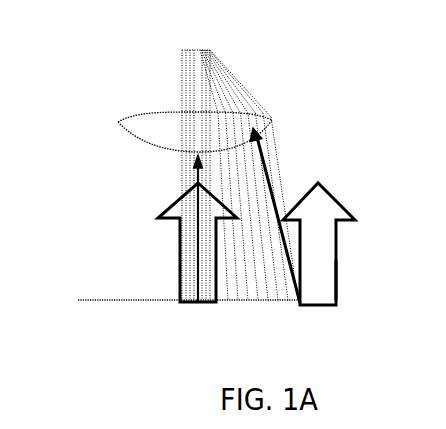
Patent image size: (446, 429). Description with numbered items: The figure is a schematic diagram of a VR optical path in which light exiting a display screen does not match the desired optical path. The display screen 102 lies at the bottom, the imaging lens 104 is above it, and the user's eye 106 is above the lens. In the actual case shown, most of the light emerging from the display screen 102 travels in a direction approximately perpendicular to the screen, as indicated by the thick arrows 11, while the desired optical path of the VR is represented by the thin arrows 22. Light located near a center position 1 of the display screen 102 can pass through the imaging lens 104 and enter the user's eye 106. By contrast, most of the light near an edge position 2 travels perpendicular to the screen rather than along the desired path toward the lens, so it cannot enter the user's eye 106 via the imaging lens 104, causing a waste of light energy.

The display screen 102 is at (120, 298).
The imaging lens 104 is at (145, 110).
The user's eye 106 is at (195, 50).
The thin arrows 22 is at (270, 175).
The thick arrows 11 is at (338, 248).
The center position 1 is at (197, 248).
The edge position 2 is at (319, 263).